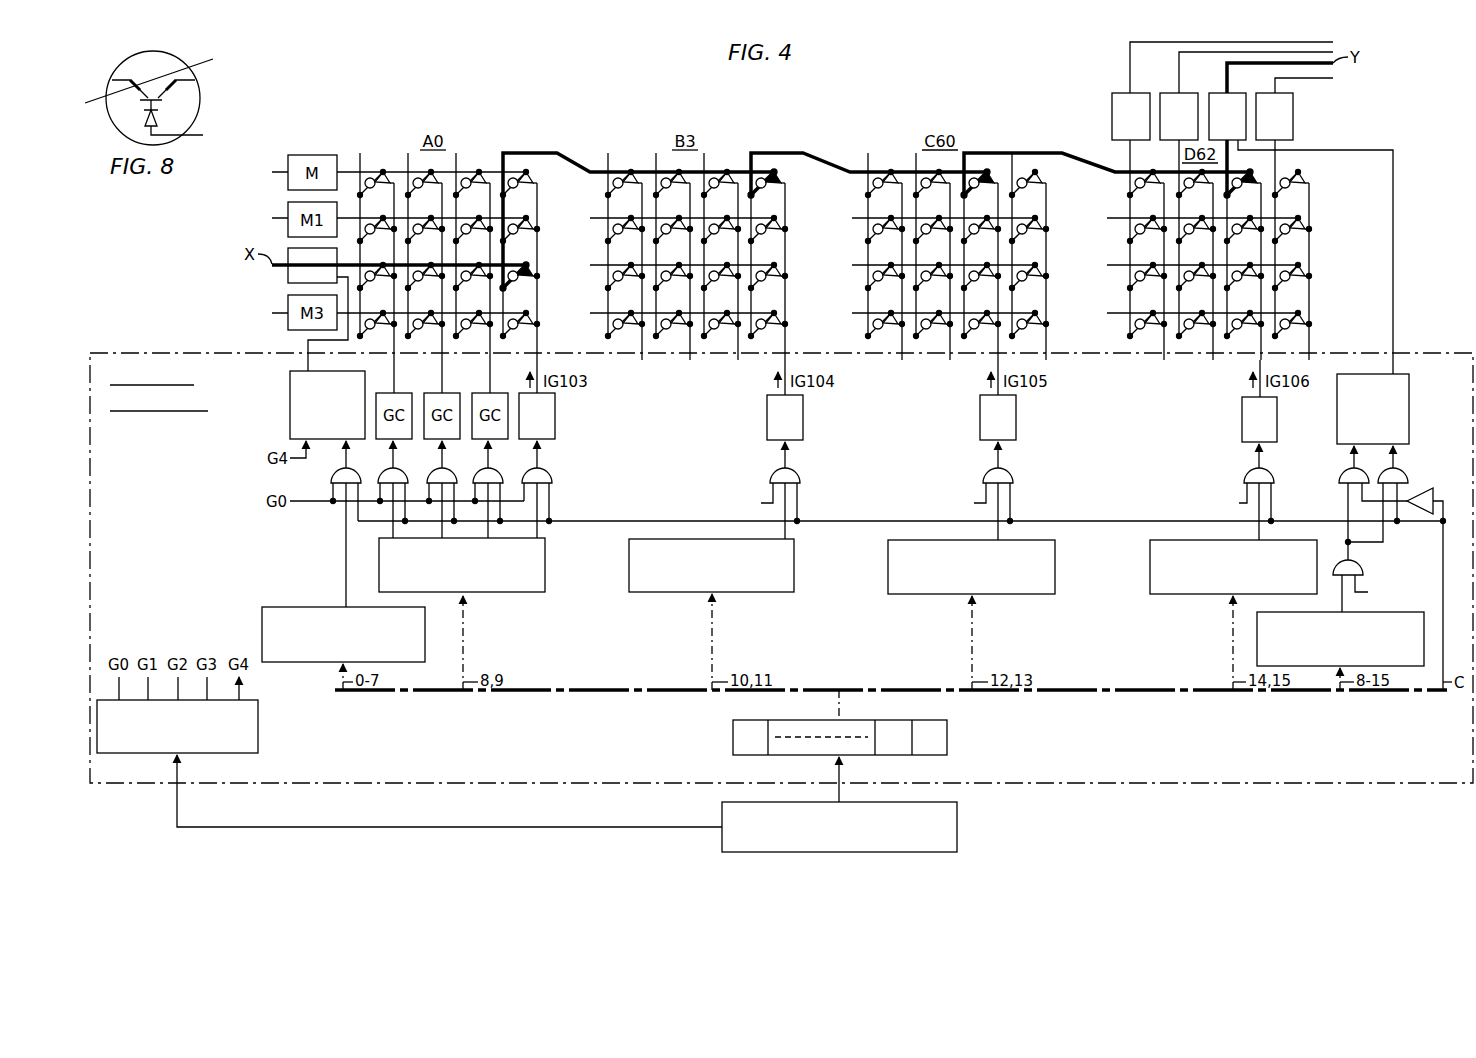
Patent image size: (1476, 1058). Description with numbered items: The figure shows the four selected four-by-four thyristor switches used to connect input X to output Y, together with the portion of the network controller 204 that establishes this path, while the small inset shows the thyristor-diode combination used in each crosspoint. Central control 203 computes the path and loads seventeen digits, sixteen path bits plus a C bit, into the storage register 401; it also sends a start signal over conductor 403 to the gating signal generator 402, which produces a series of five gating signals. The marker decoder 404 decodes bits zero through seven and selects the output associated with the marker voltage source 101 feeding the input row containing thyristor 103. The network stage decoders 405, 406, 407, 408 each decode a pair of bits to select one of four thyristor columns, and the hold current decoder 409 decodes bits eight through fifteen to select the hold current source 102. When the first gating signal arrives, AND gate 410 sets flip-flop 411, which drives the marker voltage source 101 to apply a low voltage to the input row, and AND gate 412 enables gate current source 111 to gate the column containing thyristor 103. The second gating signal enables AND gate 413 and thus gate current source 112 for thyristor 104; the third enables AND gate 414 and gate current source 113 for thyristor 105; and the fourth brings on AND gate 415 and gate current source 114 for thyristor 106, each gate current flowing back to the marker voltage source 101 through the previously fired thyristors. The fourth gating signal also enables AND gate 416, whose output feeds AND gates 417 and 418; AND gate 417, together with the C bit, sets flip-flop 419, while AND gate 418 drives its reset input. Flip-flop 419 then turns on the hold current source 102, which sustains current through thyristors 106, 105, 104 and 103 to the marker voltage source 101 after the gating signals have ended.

The marker voltage source 101 is at (288, 280).
The hold current source 102 is at (1224, 90).
The thyristor 103 is at (516, 280).
The thyristor 104 is at (762, 185).
The thyristor 105 is at (975, 185).
The thyristor 106 is at (1240, 188).
The gate current source 111 is at (555, 416).
The gate current source 112 is at (767, 418).
The gate current source 113 is at (980, 418).
The gate current source 114 is at (1242, 418).
The central control 203 is at (957, 828).
The network controller 204 is at (155, 353).
The storage register 401 is at (947, 738).
The gating signal generator 402 is at (258, 725).
The conductor 403 is at (616, 827).
The marker decoder 404 is at (292, 607).
The network stage decoder 405 is at (512, 594).
The network stage decoder 406 is at (664, 594).
The network stage decoder 407 is at (922, 596).
The network stage decoder 408 is at (1182, 596).
The hold current decoder 409 is at (1257, 632).
The AND gate 410 is at (333, 474).
The flip-flop 411 is at (290, 404).
The AND gate 412 is at (549, 474).
The AND gate 413 is at (773, 475).
The AND gate 414 is at (986, 475).
The AND gate 415 is at (1247, 475).
The AND gate 416 is at (1360, 565).
The AND gate 417 is at (1404, 475).
The AND gate 418 is at (1345, 475).
The flip-flop 419 is at (1409, 413).